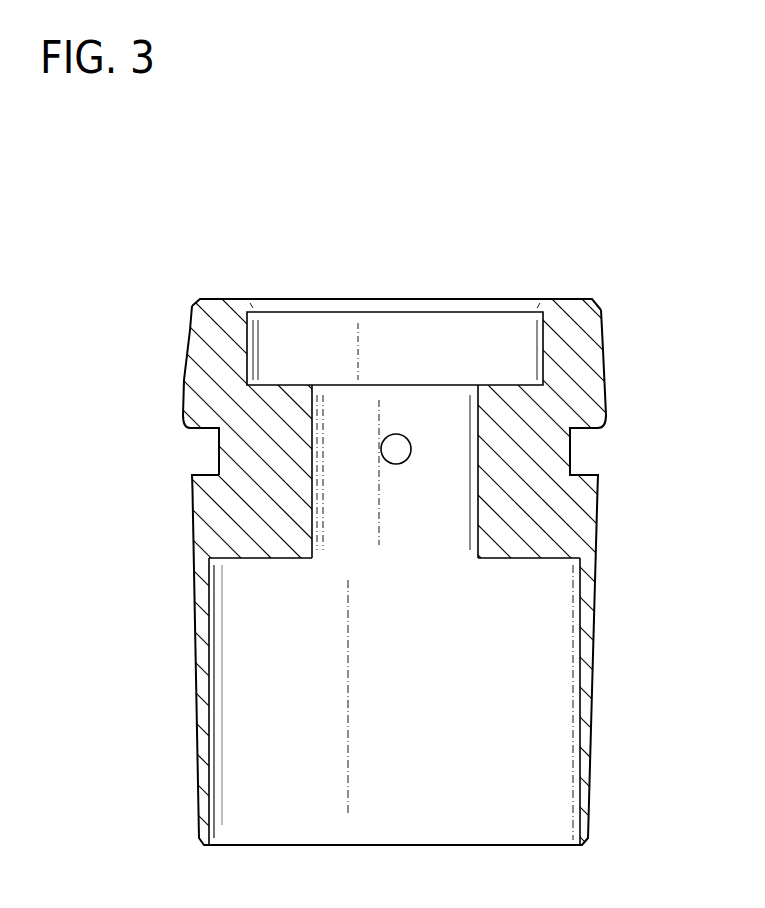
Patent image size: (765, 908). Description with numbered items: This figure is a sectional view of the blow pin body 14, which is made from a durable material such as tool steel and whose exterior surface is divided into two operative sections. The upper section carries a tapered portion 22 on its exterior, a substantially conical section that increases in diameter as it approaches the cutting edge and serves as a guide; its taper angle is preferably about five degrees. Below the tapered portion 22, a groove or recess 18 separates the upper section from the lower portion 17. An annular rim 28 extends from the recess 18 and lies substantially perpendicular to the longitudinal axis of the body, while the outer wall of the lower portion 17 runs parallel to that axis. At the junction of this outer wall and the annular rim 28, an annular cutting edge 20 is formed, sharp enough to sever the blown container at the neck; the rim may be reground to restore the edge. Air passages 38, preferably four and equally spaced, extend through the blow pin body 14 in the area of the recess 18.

The blow pin body 14 is at (376, 454).
The lower portion 17 is at (197, 727).
The groove or recess 18 is at (218, 441).
The annular rim 28 is at (200, 473).
The tapered portion 22 is at (603, 362).
The annular cutting edge 20 is at (602, 476).
The air passages 38 is at (399, 447).